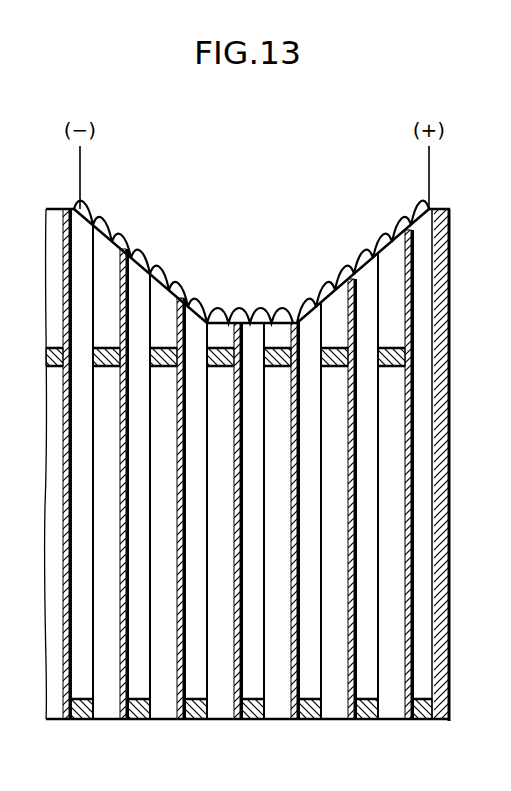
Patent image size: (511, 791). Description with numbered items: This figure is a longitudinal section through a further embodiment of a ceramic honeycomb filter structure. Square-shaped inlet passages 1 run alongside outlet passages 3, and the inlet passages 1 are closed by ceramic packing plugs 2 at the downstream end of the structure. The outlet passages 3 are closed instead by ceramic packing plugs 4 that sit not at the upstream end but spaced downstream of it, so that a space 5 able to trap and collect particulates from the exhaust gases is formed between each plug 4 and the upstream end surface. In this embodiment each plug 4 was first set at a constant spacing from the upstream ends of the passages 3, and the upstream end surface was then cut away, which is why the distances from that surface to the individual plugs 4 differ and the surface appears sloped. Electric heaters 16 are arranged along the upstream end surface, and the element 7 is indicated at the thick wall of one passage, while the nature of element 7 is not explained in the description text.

The inlet passages 1 is at (417, 443).
The ceramic packing plugs 2 is at (418, 710).
The outlet passages 3 is at (390, 418).
The ceramic packing plugs 4 is at (400, 347).
The space 5 is at (395, 285).
The current collector 7 is at (413, 500).
The electric heaters 16 is at (358, 245).